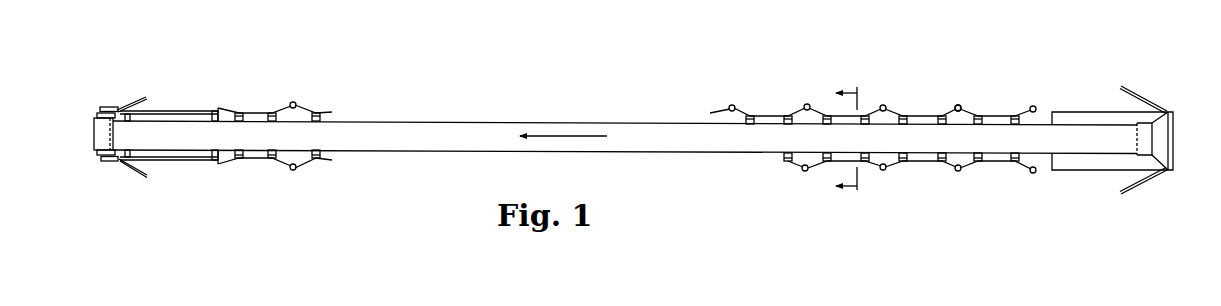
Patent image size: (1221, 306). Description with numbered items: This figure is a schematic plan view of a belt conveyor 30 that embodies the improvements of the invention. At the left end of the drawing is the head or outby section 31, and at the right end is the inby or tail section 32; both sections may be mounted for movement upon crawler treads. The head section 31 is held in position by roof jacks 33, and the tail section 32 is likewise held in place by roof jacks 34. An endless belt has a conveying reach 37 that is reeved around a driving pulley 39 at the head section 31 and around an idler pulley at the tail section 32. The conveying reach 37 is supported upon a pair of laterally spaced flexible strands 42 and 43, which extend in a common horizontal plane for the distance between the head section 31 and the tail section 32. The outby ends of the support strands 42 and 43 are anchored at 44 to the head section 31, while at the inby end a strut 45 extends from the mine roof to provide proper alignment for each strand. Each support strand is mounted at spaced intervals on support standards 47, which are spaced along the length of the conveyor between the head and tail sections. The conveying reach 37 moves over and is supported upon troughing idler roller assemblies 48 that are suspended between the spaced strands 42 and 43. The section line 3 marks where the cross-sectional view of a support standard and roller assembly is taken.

The belt conveyor 30 is at (600, 167).
The head or outby section 31 is at (177, 110).
The inby or tail section 32 is at (1080, 111).
The roof jacks 33 is at (140, 97).
The roof jacks 34 is at (1143, 96).
The conveying reach 37 is at (453, 133).
The driving pulley 39 is at (99, 154).
The flexible strand 42 is at (932, 166).
The flexible strand 43 is at (770, 114).
The anchor 44 is at (220, 106).
The strut 45 is at (1033, 106).
The support standard 47 is at (959, 105).
The idler roller assemblies 48 is at (317, 113).
The section line 3- 3 is at (837, 140).